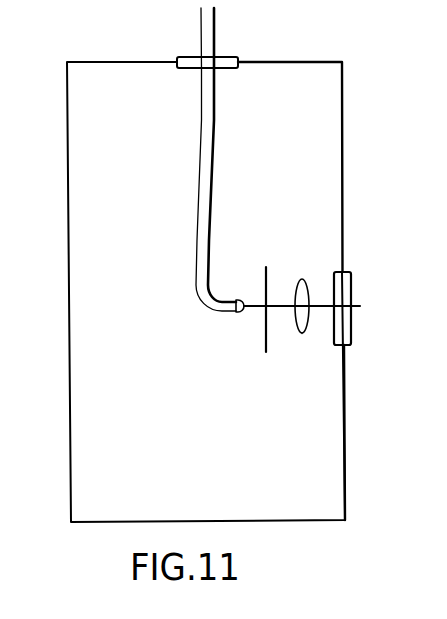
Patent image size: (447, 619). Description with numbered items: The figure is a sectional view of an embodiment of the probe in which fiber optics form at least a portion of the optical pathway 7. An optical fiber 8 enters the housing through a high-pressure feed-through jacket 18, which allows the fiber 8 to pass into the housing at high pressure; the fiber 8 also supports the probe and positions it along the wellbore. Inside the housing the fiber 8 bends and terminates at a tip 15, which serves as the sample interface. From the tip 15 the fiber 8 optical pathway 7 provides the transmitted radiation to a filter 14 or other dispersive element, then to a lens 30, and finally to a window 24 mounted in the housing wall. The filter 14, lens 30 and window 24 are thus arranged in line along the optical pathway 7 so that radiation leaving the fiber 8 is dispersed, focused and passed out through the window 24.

The optical pathway 7 is at (295, 306).
The fiber 8 is at (215, 22).
The filter 14 is at (265, 268).
The tip 15 is at (239, 314).
The high-pressure feed-through jacket 18 is at (183, 68).
The window 24 is at (352, 287).
The lens 30 is at (302, 333).